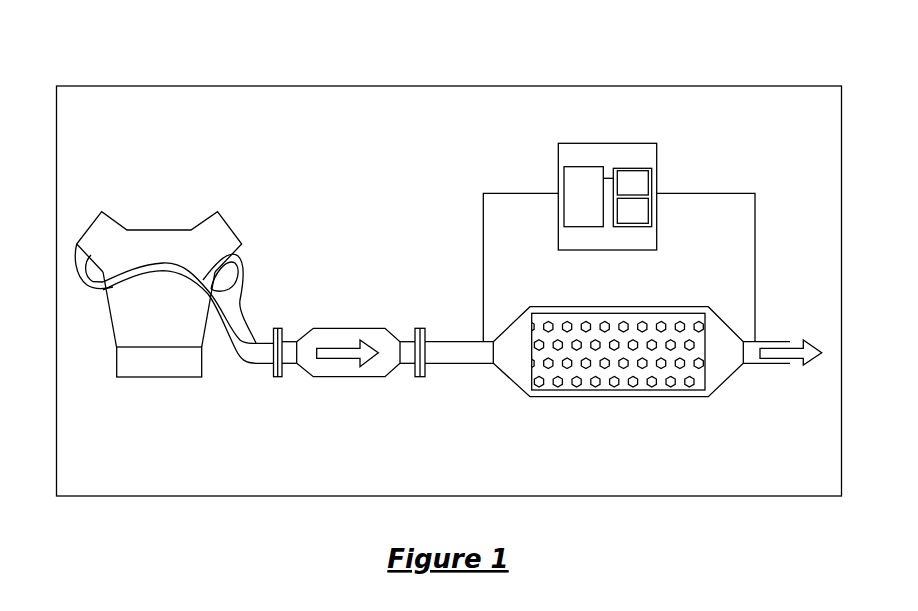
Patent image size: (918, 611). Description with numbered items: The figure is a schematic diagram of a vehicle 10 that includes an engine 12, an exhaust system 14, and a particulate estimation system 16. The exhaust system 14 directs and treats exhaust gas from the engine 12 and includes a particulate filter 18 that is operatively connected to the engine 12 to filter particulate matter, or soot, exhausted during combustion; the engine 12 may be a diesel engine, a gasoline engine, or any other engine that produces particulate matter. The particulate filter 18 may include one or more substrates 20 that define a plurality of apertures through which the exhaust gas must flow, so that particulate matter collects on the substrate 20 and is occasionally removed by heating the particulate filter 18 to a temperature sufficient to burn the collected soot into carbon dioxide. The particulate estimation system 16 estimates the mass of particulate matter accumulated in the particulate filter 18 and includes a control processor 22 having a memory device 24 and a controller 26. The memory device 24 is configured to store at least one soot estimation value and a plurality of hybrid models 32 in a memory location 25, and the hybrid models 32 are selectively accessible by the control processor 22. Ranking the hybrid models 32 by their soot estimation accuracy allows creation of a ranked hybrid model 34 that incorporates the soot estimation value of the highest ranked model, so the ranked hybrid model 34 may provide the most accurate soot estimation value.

The vehicle 10 is at (448, 85).
The engine 12 is at (168, 250).
The exhaust system 14 is at (339, 232).
The particulate estimation system 16 is at (528, 173).
The particulate filter 18 is at (546, 358).
The substrate 20 is at (660, 360).
The control processor 22 is at (653, 160).
The memory device 24 is at (657, 195).
The memory location 25 is at (603, 167).
The controller 26 is at (588, 197).
The hybrid models 32 is at (632, 183).
The ranked hybrid model 34 is at (632, 210).